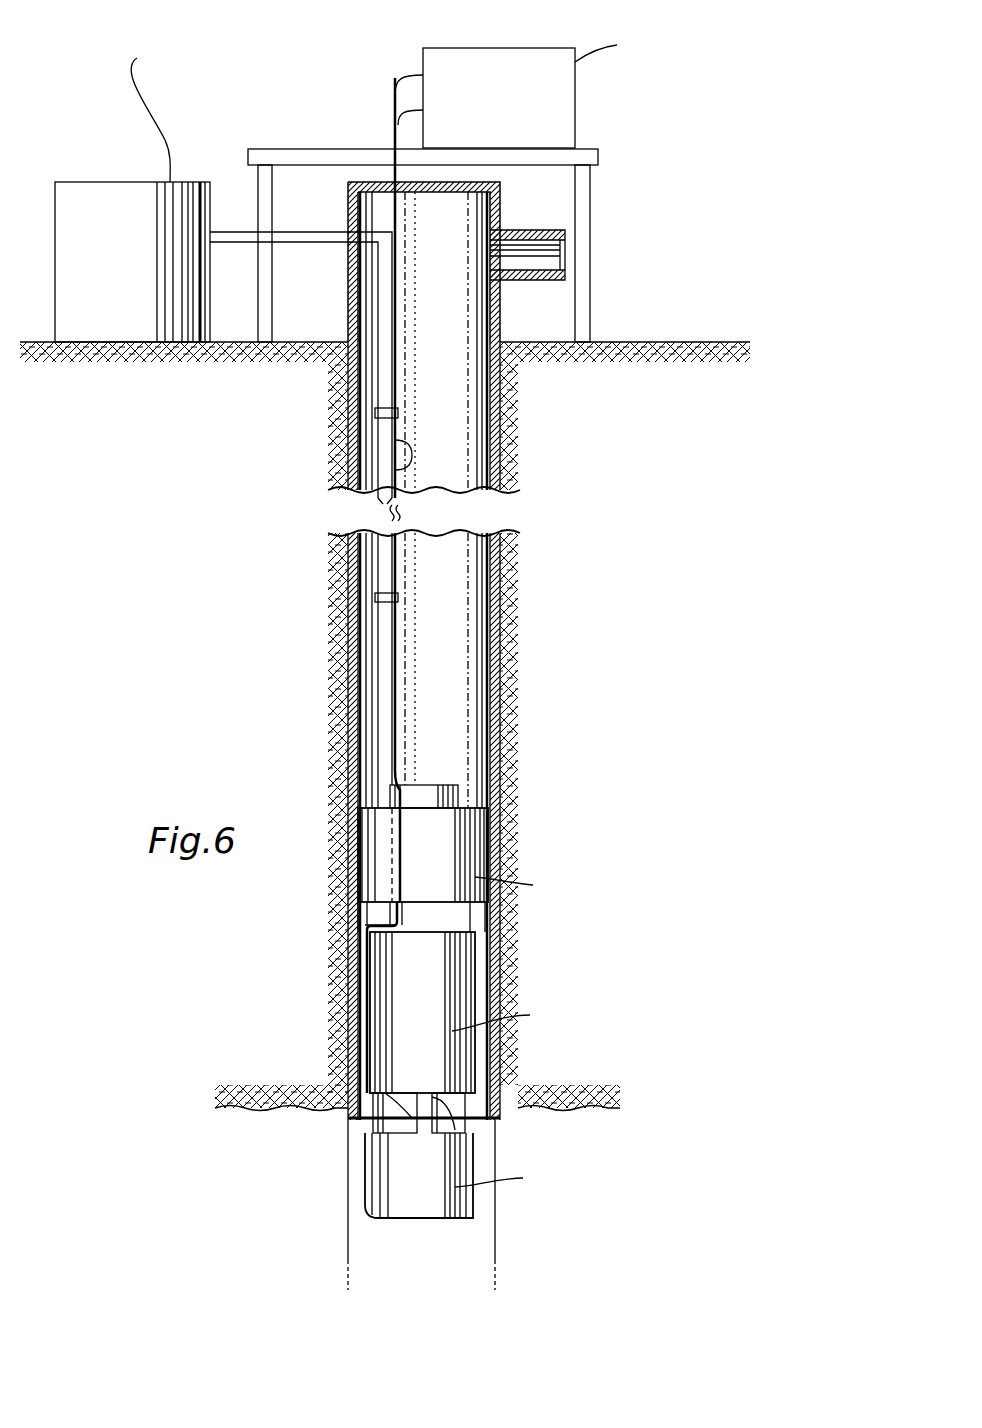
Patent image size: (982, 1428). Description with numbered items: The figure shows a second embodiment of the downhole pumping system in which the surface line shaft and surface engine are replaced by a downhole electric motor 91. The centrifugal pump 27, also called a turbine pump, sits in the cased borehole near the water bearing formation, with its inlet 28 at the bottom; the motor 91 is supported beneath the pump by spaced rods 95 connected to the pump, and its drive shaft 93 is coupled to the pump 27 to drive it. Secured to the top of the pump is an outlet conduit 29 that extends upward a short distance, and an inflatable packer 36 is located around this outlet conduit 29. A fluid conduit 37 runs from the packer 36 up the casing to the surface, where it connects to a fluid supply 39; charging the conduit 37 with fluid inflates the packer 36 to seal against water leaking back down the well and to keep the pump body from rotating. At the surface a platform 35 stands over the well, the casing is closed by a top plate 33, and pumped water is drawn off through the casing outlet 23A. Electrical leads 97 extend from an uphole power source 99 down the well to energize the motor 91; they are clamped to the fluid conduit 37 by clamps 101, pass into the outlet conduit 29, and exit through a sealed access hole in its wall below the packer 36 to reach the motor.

The fluid supply 39 is at (148, 182).
The platform 35 is at (298, 149).
The uphole power source 99 is at (485, 48).
The electrical leads 97 is at (393, 85).
The top plate 33 is at (440, 182).
The outlet 23A is at (545, 230).
The fluid conduit 37 is at (380, 692).
The clamps 101 is at (375, 412).
The outlet conduit 29 is at (423, 785).
The inflatable packer 36 is at (423, 862).
The centrifugal pump 27 is at (423, 990).
The drive shaft 93 is at (410, 1103).
The spaced rods 95 is at (377, 1127).
The pump inlet 28 is at (455, 1130).
The downhole electric motor 91 is at (425, 1205).